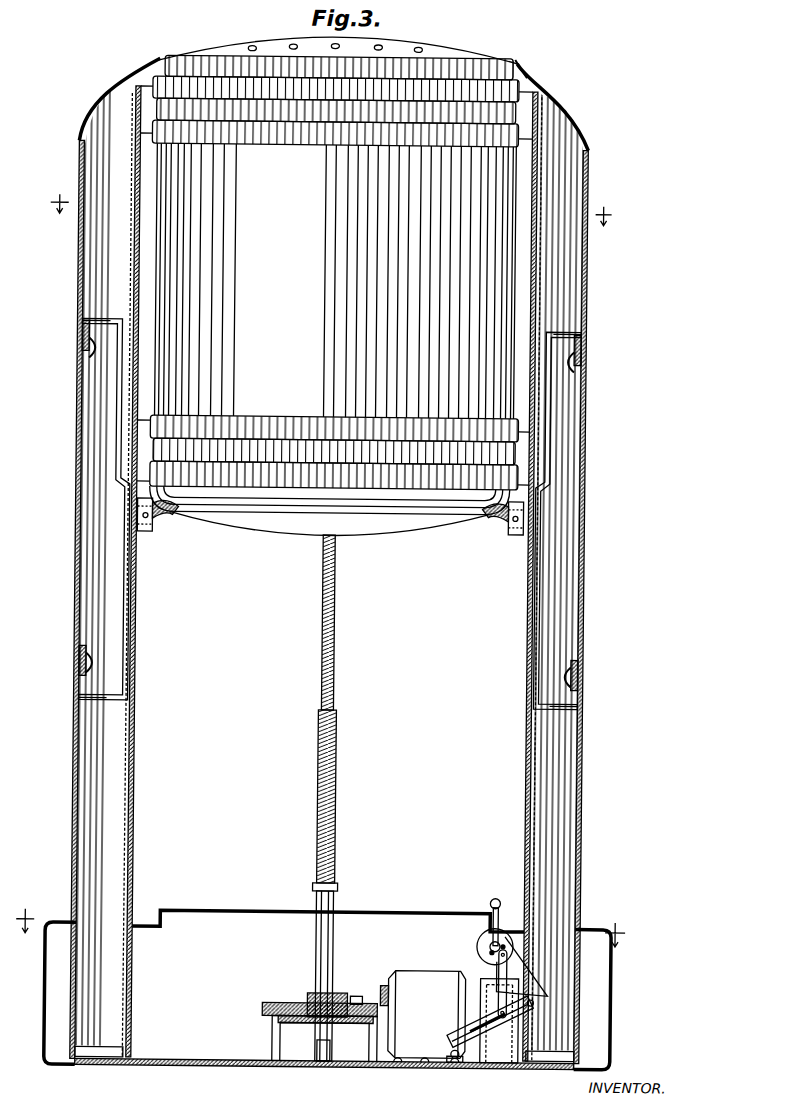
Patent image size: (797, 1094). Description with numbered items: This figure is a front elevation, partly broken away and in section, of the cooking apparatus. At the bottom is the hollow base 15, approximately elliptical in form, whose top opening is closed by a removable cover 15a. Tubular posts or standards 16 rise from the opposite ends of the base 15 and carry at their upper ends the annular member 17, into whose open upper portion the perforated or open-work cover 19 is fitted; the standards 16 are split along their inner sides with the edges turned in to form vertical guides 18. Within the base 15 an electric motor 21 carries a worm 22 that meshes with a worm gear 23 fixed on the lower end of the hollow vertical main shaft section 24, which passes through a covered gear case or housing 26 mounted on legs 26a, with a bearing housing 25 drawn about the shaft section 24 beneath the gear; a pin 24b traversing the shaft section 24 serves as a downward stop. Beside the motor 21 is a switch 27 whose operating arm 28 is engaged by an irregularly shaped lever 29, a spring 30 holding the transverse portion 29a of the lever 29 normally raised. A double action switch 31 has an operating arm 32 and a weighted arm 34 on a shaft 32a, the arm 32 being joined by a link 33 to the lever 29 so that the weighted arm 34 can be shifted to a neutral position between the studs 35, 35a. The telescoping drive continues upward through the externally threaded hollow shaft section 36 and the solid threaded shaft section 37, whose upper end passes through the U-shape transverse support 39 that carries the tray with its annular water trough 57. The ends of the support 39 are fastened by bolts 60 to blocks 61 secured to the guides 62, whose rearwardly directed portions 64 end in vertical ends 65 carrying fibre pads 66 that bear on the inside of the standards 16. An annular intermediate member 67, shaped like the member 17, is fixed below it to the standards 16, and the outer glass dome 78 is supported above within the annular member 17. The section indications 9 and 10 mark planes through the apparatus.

The section line 9- 9 is at (330, 212).
The section line 10- 10 is at (323, 928).
The hollow base 15 is at (616, 950).
The removable cover 15a is at (250, 910).
The tubular posts or standards 16 is at (75, 550).
The annular member 17 is at (518, 84).
The vertical guides 18 is at (137, 740).
The perforated or open-work cover 19 is at (440, 56).
The electric motor 21 is at (409, 975).
The worm 22 is at (317, 994).
The worm gear 23 is at (301, 1023).
The hollow vertical main or operating shaft section 24 is at (338, 970).
The pin 24b is at (336, 1050).
The bearing housing 25 is at (277, 1032).
The covered gear case or housing 26 is at (280, 1003).
The legs 26a is at (361, 996).
The switch 27 is at (505, 1062).
The operating arm 28 is at (541, 1003).
The irregularly shaped lever 29 is at (460, 1040).
The transverse portion 29a is at (494, 1032).
The spring 30 is at (462, 1062).
The double action switch 31 is at (502, 920).
The operating arm 32 is at (524, 955).
The shaft 32a is at (494, 952).
The link 33 is at (511, 990).
The weighted arm 34 is at (494, 902).
The stud 35 is at (484, 945).
The stud 35a is at (510, 945).
The externally-threaded hollow shaft section 36 is at (338, 780).
The externally screw-threaded solid shaft portion 37 is at (323, 640).
The U-shape transverse support 39 is at (291, 526).
The annular water trough 57 is at (410, 514).
The bolts 60 is at (165, 518).
The blocks 61 is at (148, 533).
The guides 62 is at (115, 428).
The rearwardly directed upper and lower portions 64 is at (565, 333).
The vertical ends 65 is at (86, 352).
The fibre pads or washers 66 is at (80, 338).
The annular intermediate member 67 is at (270, 430).
The second or outer glass dome 78 is at (168, 226).